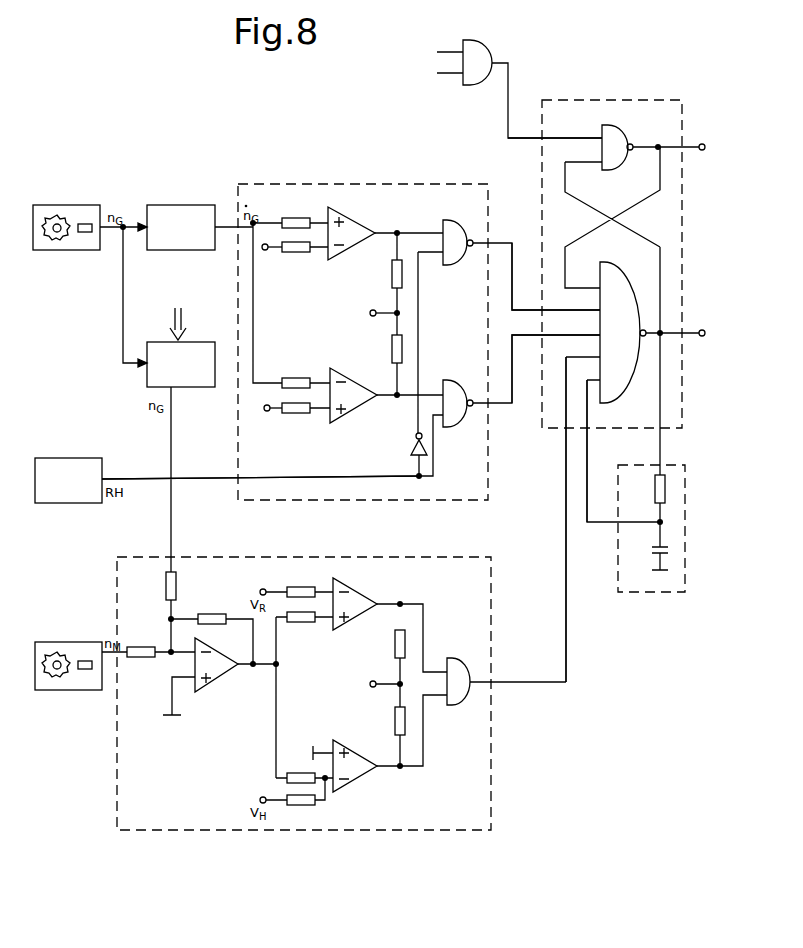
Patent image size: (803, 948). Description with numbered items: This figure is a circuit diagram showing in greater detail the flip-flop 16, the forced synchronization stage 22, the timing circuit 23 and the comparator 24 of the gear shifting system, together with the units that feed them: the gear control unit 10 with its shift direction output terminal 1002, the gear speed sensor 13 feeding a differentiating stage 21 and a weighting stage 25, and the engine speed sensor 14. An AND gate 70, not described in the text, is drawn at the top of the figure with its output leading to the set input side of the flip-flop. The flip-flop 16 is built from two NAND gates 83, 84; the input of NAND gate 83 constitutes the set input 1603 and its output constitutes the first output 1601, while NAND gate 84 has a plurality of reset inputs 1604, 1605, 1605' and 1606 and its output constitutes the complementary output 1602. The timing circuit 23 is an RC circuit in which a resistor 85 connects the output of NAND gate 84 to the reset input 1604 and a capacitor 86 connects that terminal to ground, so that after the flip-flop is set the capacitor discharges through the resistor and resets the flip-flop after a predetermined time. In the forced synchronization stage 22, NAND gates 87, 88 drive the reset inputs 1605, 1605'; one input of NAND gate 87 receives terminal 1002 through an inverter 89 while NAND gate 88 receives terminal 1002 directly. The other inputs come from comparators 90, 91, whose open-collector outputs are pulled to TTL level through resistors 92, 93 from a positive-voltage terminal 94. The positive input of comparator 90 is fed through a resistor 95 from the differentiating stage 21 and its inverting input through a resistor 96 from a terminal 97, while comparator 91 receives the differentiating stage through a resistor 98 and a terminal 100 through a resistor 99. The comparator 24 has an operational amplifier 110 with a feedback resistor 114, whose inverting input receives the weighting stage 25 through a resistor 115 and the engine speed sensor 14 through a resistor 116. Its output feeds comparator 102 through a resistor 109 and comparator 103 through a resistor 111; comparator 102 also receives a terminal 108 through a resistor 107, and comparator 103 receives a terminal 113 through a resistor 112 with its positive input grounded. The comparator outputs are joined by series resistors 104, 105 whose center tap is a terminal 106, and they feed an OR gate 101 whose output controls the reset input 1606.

The gear speed sensor 13 is at (76, 208).
The differentiating stage 21 is at (176, 208).
The weighting stage 25 is at (162, 370).
The forced synchronization stage 22 is at (356, 188).
The resistor 95 is at (296, 222).
The resistor 96 is at (296, 252).
The terminal 97 is at (265, 250).
The comparator 90 is at (355, 240).
The NAND gate 87 is at (452, 230).
The resistor 92 is at (392, 278).
The terminal 94 is at (369, 313).
The resistor 93 is at (392, 346).
The resistor 98 is at (296, 382).
The resistor 99 is at (296, 413).
The terminal 100 is at (268, 411).
The comparator 91 is at (348, 398).
The NAND gate 88 is at (452, 426).
The inverter 89 is at (410, 448).
The AND gate 70 is at (478, 50).
The flip-flop 16 is at (606, 106).
The NAND gate 83 is at (615, 136).
The first output 1601 is at (700, 142).
The set input 1603 is at (538, 140).
The NAND gate 84 is at (612, 290).
The complementary output 1602 is at (698, 340).
The reset input 1604 is at (588, 432).
The reset input 1606 is at (563, 432).
The reset input 1605 is at (521, 283).
The reset input 1605' is at (521, 366).
The timing circuit 23 is at (640, 598).
The resistor 85 is at (655, 490).
The capacitor 86 is at (652, 549).
The gear control unit 10 is at (69, 470).
The shift direction output terminal 1002 is at (104, 479).
The comparator 24 is at (482, 778).
The resistor 115 is at (166, 586).
The feedback resistor 114 is at (214, 622).
The engine speed sensor 14 is at (82, 650).
The resistor 116 is at (140, 657).
The operational amplifier 110 is at (216, 678).
The resistor 107 is at (300, 592).
The terminal 108 is at (262, 589).
The resistor 109 is at (300, 620).
The comparator 102 is at (356, 602).
The resistor 104 is at (395, 645).
The terminal 106 is at (369, 684).
The resistor 105 is at (395, 720).
The OR gate 101 is at (452, 670).
The comparator 103 is at (356, 774).
The resistor 111 is at (300, 778).
The resistor 112 is at (300, 803).
The terminal 113 is at (262, 797).